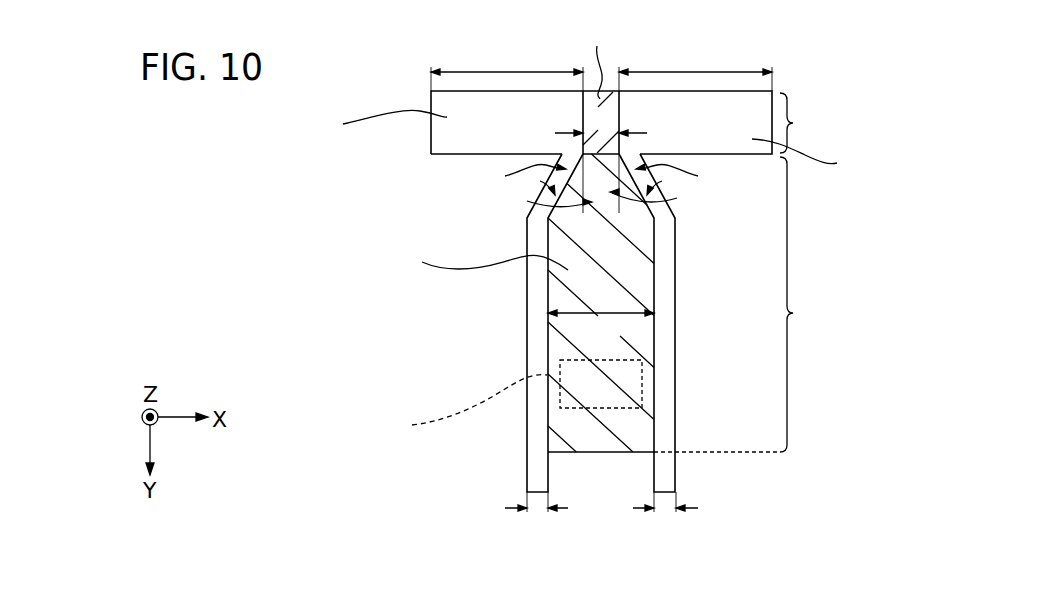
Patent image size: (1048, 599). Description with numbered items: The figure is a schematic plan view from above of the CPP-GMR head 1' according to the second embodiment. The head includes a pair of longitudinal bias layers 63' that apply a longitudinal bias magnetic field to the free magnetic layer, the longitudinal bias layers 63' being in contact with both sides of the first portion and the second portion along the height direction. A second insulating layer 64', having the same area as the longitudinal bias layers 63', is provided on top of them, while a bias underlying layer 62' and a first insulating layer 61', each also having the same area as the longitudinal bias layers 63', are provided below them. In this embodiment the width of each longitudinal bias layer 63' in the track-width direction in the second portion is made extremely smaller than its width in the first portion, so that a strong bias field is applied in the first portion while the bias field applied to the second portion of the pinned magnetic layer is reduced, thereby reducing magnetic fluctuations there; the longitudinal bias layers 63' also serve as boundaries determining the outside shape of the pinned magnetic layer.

The CPP-GMR head 1' is at (632, 281).
The longitudinal bias layers 63' is at (578, 327).
The first insulating layer 61' is at (601, 323).
The bias underlying layer 62' is at (601, 323).
The second insulating layer 64' is at (601, 323).